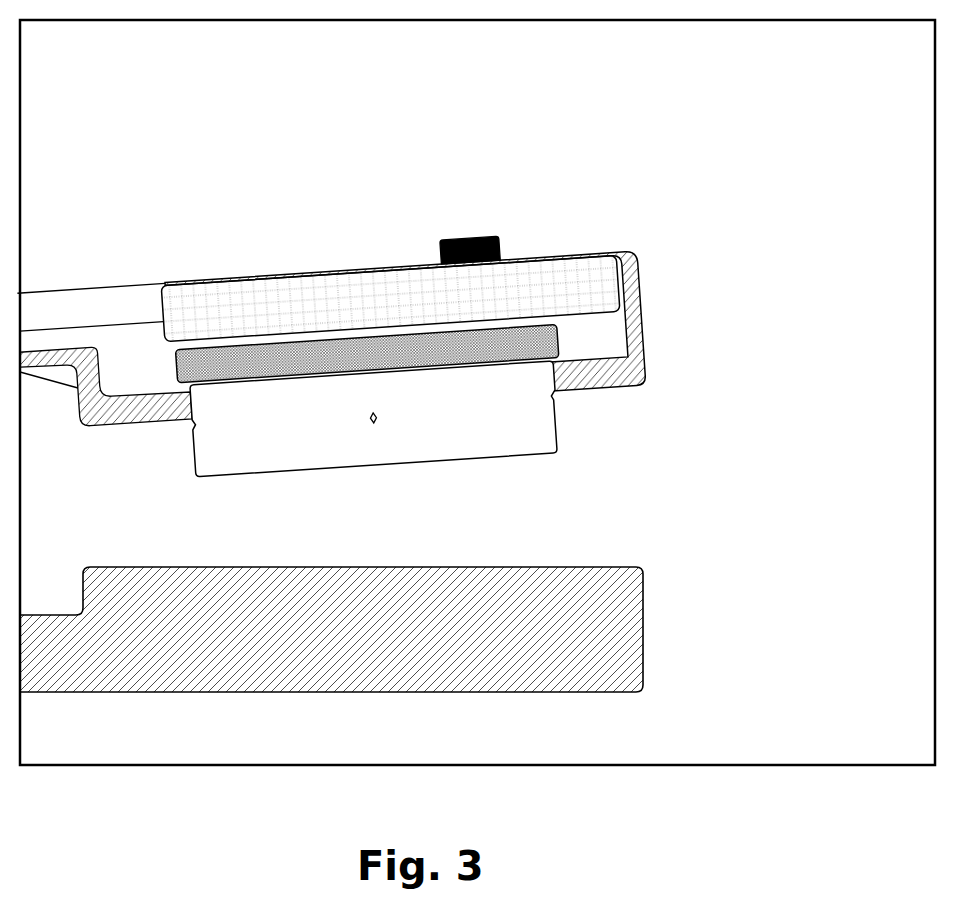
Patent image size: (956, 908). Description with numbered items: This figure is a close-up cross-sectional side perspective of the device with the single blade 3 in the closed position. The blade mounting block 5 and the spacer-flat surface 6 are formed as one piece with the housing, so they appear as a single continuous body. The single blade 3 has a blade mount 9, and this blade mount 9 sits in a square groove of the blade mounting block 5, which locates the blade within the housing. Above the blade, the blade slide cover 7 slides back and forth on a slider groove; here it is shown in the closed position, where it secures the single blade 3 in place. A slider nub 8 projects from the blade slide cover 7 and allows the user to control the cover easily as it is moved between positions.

The single blade 3 is at (558, 427).
The blade mounting block 5 is at (641, 303).
The spacer-flat surface 6 is at (643, 593).
The blade slide cover 7 is at (622, 262).
The slider nub 8 is at (502, 245).
The blade mount 9 is at (561, 345).